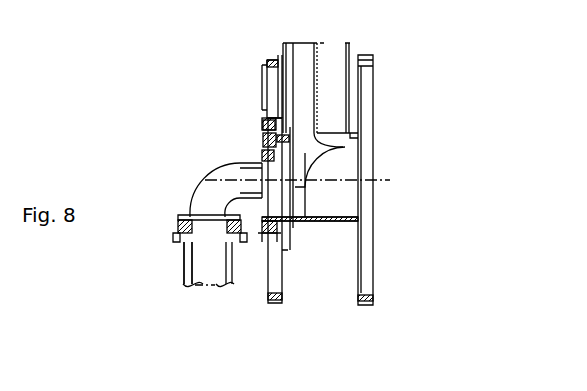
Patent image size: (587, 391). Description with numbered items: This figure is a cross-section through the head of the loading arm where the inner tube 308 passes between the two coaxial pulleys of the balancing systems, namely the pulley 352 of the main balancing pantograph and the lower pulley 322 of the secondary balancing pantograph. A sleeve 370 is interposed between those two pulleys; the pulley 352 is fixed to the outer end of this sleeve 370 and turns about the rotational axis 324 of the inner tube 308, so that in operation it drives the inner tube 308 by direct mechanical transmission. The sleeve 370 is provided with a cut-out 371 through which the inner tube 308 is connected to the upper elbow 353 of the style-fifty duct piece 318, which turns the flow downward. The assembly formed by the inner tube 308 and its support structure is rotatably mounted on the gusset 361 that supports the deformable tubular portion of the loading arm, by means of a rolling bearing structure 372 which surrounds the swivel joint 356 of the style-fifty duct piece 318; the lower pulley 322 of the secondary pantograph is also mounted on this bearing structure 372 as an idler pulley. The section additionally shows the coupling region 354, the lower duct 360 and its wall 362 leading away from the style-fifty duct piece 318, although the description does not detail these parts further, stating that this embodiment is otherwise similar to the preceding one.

The inner tube 308 is at (350, 45).
The style "50" 318 is at (253, 145).
The lower pulley of the secondary balancing pantograph 322 is at (268, 59).
The rotational axis of the inner tube 324 is at (230, 181).
The pulley of the main balancing system 352 is at (375, 62).
The upper elbow 353 is at (352, 172).
The coupling 354 is at (250, 160).
The swivel joint 356 is at (258, 148).
The outlet pipe 360 is at (241, 284).
The gusset 361 is at (252, 236).
The pipe wall 362 is at (184, 284).
The sleeve 370 is at (322, 222).
The cut-out 371 is at (305, 150).
The rolling bearing structure 372 is at (257, 125).